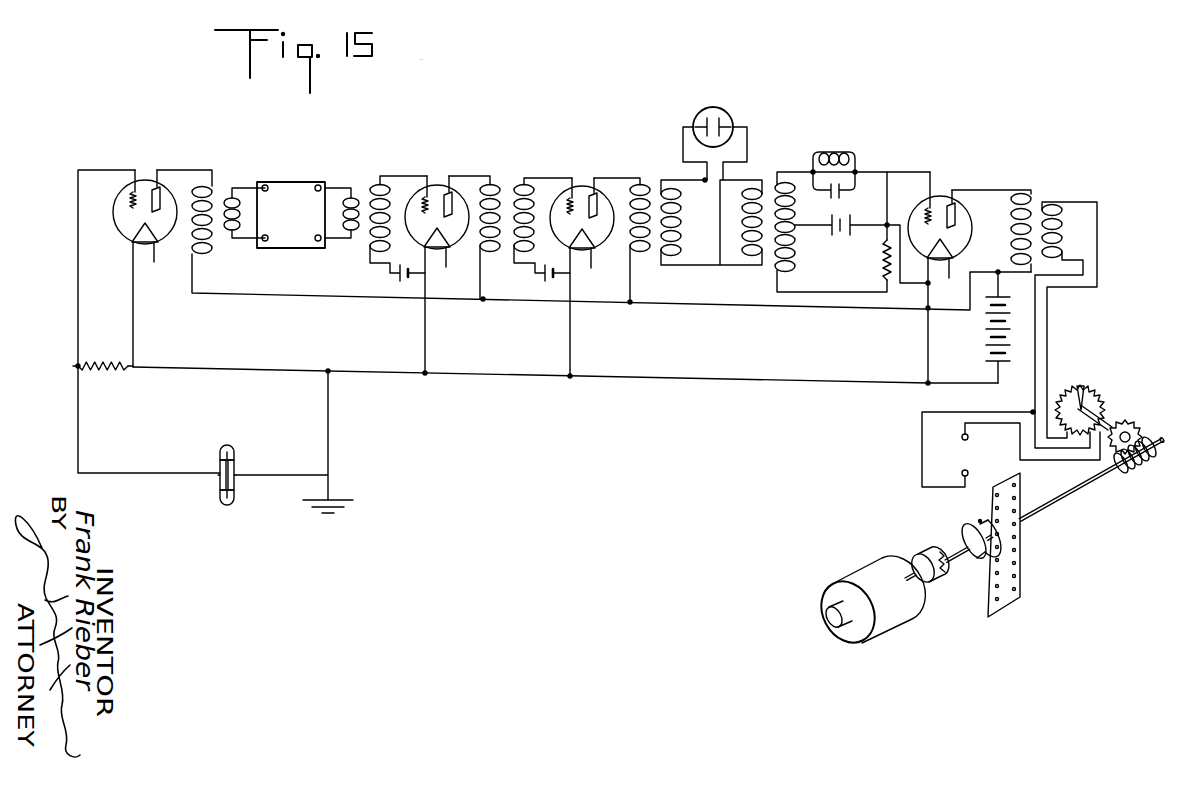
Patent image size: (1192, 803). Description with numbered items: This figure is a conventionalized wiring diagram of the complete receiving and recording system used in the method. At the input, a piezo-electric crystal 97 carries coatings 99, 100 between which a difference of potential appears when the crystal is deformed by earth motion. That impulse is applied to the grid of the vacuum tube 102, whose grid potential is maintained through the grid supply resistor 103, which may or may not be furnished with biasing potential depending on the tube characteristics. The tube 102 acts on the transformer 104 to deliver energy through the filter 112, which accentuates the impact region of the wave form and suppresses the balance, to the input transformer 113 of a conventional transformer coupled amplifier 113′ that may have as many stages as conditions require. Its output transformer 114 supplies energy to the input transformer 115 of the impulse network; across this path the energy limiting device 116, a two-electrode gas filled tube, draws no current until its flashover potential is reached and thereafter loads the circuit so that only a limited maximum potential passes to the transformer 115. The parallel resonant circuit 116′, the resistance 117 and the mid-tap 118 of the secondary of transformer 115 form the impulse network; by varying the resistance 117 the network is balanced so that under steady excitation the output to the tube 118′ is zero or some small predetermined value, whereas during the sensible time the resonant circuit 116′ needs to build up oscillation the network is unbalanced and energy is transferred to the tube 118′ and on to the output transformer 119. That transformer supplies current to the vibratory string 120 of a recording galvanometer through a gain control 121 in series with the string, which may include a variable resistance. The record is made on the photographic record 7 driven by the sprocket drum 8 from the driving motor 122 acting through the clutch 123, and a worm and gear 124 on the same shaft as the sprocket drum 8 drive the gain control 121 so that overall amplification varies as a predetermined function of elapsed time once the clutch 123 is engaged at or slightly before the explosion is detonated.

The vacuum tube 102 is at (150, 181).
The transformer 104 is at (216, 183).
The filter 112 is at (272, 182).
The input transformer 113 is at (366, 186).
The transformer coupled amplifier 113′ is at (623, 166).
The output transformer 114 is at (656, 186).
The potential limiting or energy limiting device 116 is at (722, 110).
The input transformer 115 is at (772, 180).
The parallel resonant circuit 116′ is at (853, 140).
The mid-tap 118 is at (793, 226).
The resistance 117 is at (886, 268).
The tube 118′ is at (944, 196).
The output transformer 119 is at (1046, 196).
The vibratory string 120 is at (958, 454).
The gain control 121 is at (1093, 380).
The worm and gear 124 is at (1140, 434).
The photographic record 7 is at (1022, 582).
The sprocket drum 8 is at (975, 562).
The clutch 123 is at (930, 555).
The driving motor 122 is at (846, 583).
The grid supply resistor 103 is at (100, 372).
The coating 99 is at (240, 464).
The coating 100 is at (220, 484).
The piezo-electric crystal 97 is at (234, 500).